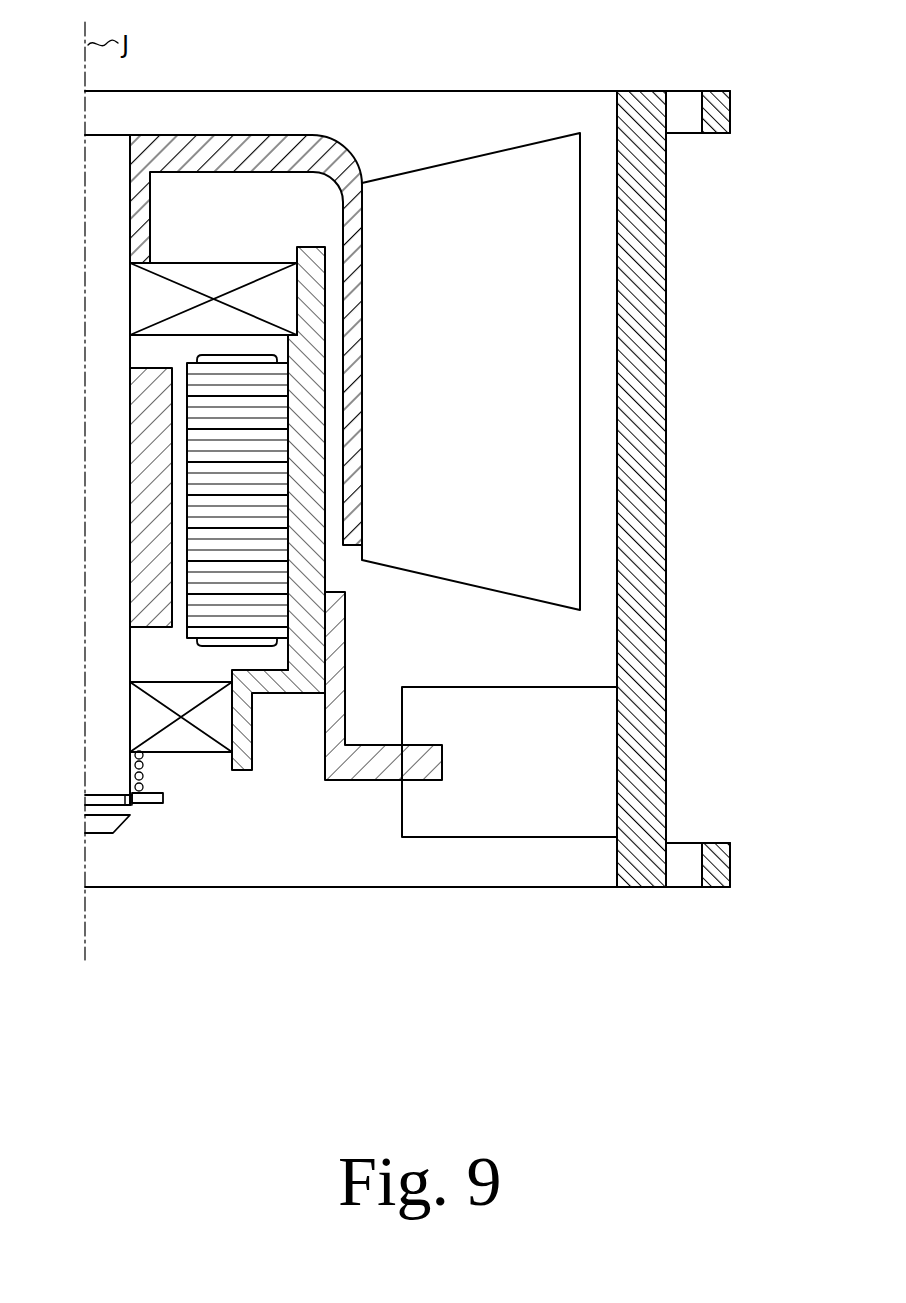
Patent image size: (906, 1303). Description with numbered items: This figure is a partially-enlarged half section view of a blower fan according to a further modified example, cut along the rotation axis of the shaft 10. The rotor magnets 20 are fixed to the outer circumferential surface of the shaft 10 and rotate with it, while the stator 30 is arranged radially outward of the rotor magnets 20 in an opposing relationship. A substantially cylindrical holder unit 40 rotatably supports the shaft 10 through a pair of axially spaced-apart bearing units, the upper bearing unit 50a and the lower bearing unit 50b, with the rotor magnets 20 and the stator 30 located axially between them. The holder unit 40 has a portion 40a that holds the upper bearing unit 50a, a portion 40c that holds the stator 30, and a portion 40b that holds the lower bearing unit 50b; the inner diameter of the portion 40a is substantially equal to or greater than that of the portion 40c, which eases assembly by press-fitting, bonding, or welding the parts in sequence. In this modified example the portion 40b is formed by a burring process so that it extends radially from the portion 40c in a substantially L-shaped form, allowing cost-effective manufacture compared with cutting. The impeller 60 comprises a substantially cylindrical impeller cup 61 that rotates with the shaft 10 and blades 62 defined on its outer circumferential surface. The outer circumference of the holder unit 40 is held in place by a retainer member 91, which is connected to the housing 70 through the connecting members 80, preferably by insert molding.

The shaft 10 is at (113, 187).
The rotor magnets 20 is at (147, 465).
The stator 30 is at (230, 538).
The holder unit 40 is at (519, 508).
The portion of the holder unit arranged to hold the upper bearing unit 40a is at (310, 295).
The portion of the holder unit arranged to hold the lower bearing unit 40b is at (248, 704).
The portion of the holder unit arranged to hold the stator 40c is at (307, 448).
The upper bearing unit 50a is at (223, 278).
The lower bearing unit 50b is at (185, 742).
The impeller 60 is at (355, 310).
The impeller cup 61 is at (331, 137).
The blades 62 is at (416, 193).
The housing 70 is at (640, 263).
The connecting members 80 is at (535, 790).
The retainer member 91 is at (378, 768).